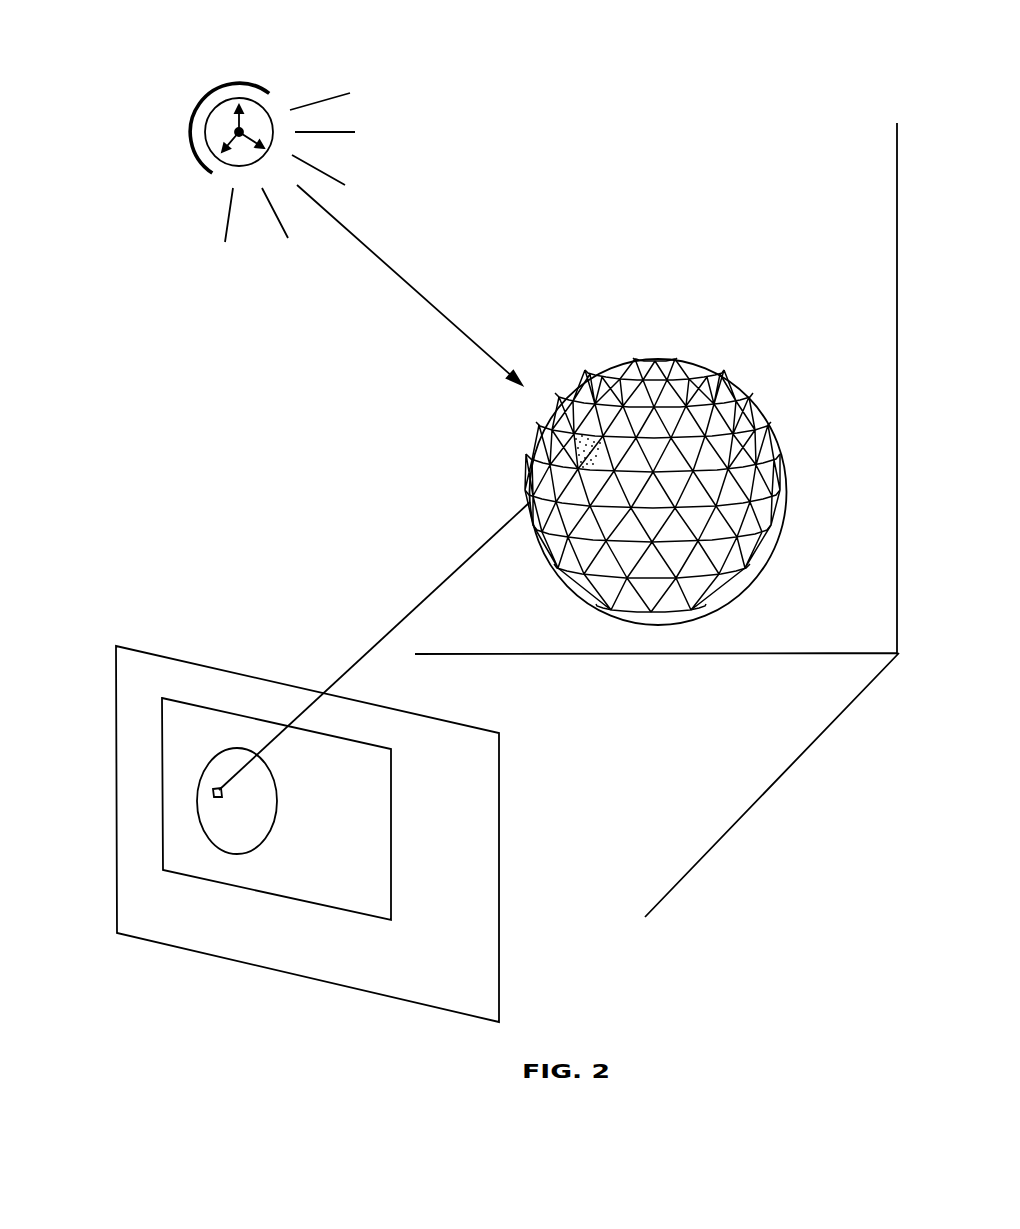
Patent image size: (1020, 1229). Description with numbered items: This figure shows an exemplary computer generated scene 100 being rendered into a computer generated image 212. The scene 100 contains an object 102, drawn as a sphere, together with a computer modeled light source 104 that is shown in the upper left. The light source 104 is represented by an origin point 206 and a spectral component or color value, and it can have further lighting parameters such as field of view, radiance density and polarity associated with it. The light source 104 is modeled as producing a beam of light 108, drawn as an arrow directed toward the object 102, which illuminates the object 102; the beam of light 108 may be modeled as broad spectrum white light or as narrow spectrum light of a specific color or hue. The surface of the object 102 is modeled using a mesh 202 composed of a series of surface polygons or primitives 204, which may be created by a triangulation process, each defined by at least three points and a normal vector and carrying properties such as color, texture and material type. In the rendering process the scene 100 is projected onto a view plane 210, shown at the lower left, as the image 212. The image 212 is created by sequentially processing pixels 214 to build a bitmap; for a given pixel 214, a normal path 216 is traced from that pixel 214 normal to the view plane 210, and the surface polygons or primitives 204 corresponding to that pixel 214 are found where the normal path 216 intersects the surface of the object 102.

The computer generated scene 100 is at (622, 152).
The object 102 is at (629, 459).
The computer modeled light source 104 is at (254, 80).
The beam of light 108 is at (442, 316).
The mesh 202 is at (731, 378).
The surface polygons or primitives 204 is at (587, 443).
The origin point 206 is at (222, 151).
The view plane 210 is at (500, 762).
The computer generated image 212 is at (392, 866).
The pixel 214 is at (213, 789).
The normal path 216 is at (420, 604).